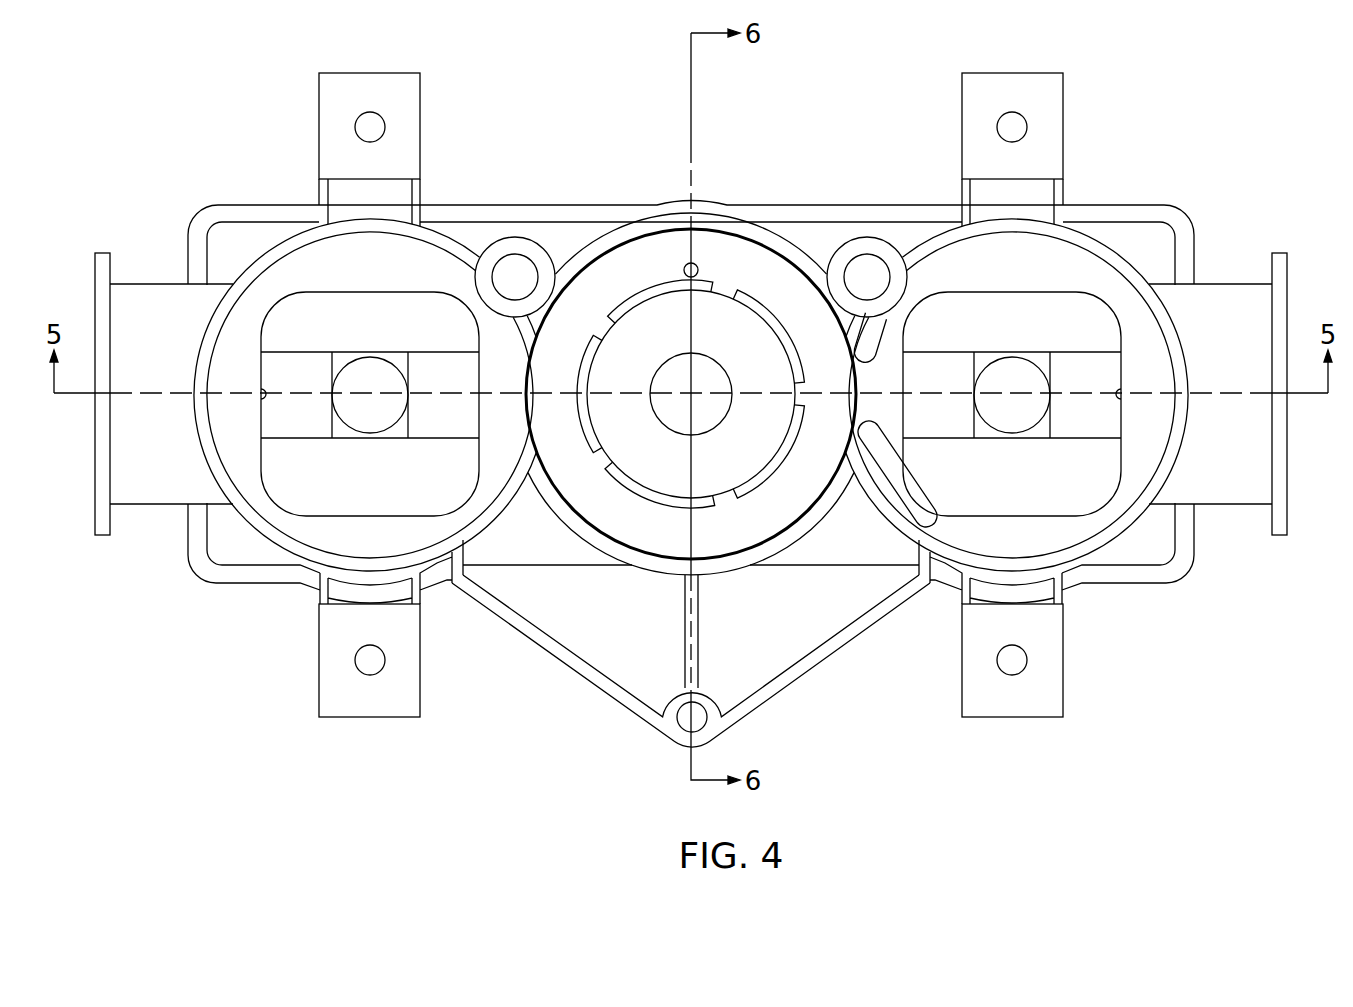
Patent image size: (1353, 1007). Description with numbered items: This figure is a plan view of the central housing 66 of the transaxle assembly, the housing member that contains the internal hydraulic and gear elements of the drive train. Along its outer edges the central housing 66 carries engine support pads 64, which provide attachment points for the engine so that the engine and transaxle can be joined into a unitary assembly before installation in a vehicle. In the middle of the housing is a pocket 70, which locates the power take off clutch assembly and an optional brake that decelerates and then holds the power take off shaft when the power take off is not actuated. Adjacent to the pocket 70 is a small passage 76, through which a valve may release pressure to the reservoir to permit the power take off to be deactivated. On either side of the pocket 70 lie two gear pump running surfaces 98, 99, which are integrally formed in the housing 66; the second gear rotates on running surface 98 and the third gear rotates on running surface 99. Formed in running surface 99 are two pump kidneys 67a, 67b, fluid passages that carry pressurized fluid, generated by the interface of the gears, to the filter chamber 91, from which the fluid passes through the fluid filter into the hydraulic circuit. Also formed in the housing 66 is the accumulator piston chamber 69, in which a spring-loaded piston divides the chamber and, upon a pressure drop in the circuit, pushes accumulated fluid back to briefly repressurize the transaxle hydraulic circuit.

The engine support pads 64 is at (387, 105).
The central housing 66 is at (1138, 205).
The pump kidney 67a is at (880, 463).
The pump kidney 67b is at (882, 326).
The accumulator piston chamber 69 is at (522, 238).
The pocket 70 is at (725, 353).
The passage 76 is at (699, 269).
The filter chamber 91 is at (862, 238).
The gear pump running surface 98 is at (357, 275).
The gear pump running surface 99 is at (999, 275).